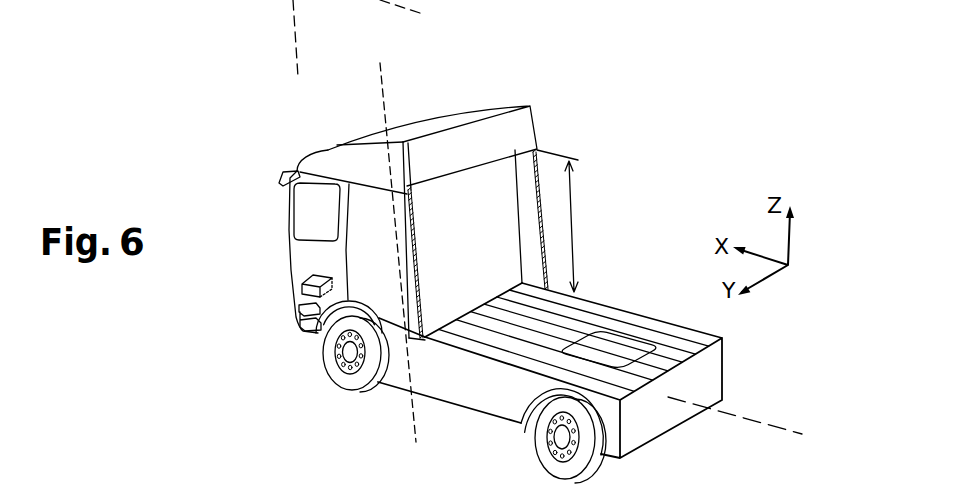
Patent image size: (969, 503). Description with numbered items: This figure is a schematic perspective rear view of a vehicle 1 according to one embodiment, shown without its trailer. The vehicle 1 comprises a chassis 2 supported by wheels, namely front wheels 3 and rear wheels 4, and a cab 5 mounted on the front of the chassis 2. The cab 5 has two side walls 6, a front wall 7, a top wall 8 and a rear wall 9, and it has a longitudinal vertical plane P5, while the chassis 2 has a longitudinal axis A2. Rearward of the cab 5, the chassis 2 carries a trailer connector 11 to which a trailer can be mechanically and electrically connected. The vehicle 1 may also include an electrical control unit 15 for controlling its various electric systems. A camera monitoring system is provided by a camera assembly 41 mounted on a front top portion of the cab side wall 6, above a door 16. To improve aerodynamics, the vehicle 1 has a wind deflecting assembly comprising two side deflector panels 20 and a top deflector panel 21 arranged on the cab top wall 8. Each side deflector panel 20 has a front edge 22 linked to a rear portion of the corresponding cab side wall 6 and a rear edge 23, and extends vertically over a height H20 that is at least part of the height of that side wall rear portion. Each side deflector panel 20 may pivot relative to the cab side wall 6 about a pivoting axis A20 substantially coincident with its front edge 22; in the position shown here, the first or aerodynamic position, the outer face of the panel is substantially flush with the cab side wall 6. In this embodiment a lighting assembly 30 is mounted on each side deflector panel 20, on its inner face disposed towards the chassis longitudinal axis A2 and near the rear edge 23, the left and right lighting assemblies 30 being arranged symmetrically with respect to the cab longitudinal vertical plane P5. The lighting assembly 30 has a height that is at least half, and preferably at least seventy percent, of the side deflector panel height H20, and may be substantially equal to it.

The vehicle 1 is at (252, 110).
The chassis 2 is at (512, 403).
The front wheels 3 is at (331, 353).
The rear wheels 4 is at (583, 483).
The cab 5 is at (256, 211).
The side wall 6 is at (375, 263).
The front wall 7 is at (289, 254).
The top wall 8 is at (447, 152).
The rear wall 9 is at (478, 237).
The trailer connector 11 is at (612, 347).
The electrical control unit 15 is at (302, 288).
The door 16 is at (302, 260).
The side deflector panel 20 is at (423, 237).
The top deflector panel 21 is at (363, 157).
The front edge 22 is at (393, 322).
The rear edge 23 is at (423, 303).
The lighting assembly 30 is at (419, 252).
The camera assembly 41 is at (281, 174).
The longitudinal vertical plane P5 is at (294, 2).
The pivoting axis A20 is at (383, 90).
The longitudinal axis A2 is at (762, 424).
The height H20 is at (579, 221).